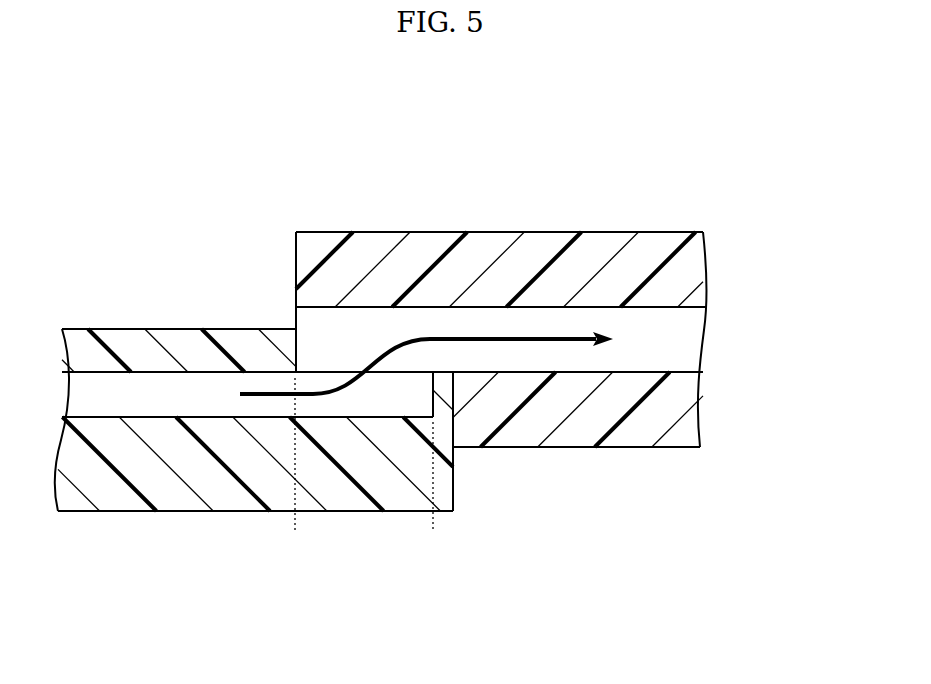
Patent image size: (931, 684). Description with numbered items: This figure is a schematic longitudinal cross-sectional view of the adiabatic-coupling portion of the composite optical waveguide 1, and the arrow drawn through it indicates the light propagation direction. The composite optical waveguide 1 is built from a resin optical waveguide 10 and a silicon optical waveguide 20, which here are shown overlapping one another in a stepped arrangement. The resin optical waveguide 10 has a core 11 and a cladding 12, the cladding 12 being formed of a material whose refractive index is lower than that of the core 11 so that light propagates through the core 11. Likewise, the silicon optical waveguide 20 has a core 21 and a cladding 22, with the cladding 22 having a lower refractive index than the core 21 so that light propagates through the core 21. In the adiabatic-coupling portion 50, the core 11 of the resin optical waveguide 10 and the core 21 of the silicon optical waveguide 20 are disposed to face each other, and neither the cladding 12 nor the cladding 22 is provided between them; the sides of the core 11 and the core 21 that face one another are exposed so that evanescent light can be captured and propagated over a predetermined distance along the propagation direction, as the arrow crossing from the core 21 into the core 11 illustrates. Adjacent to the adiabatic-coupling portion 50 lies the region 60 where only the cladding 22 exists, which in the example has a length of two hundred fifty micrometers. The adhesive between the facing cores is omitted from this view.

The composite optical waveguide 1 is at (704, 174).
The resin optical waveguide 10 is at (338, 162).
The core 11 is at (360, 330).
The cladding 12 is at (423, 258).
The silicon optical waveguide 20 is at (223, 258).
The core 21 is at (137, 390).
The cladding 22 is at (198, 353).
The adiabatic-coupling portion 50 is at (433, 533).
The region where only cladding 22 exists 60 is at (453, 514).